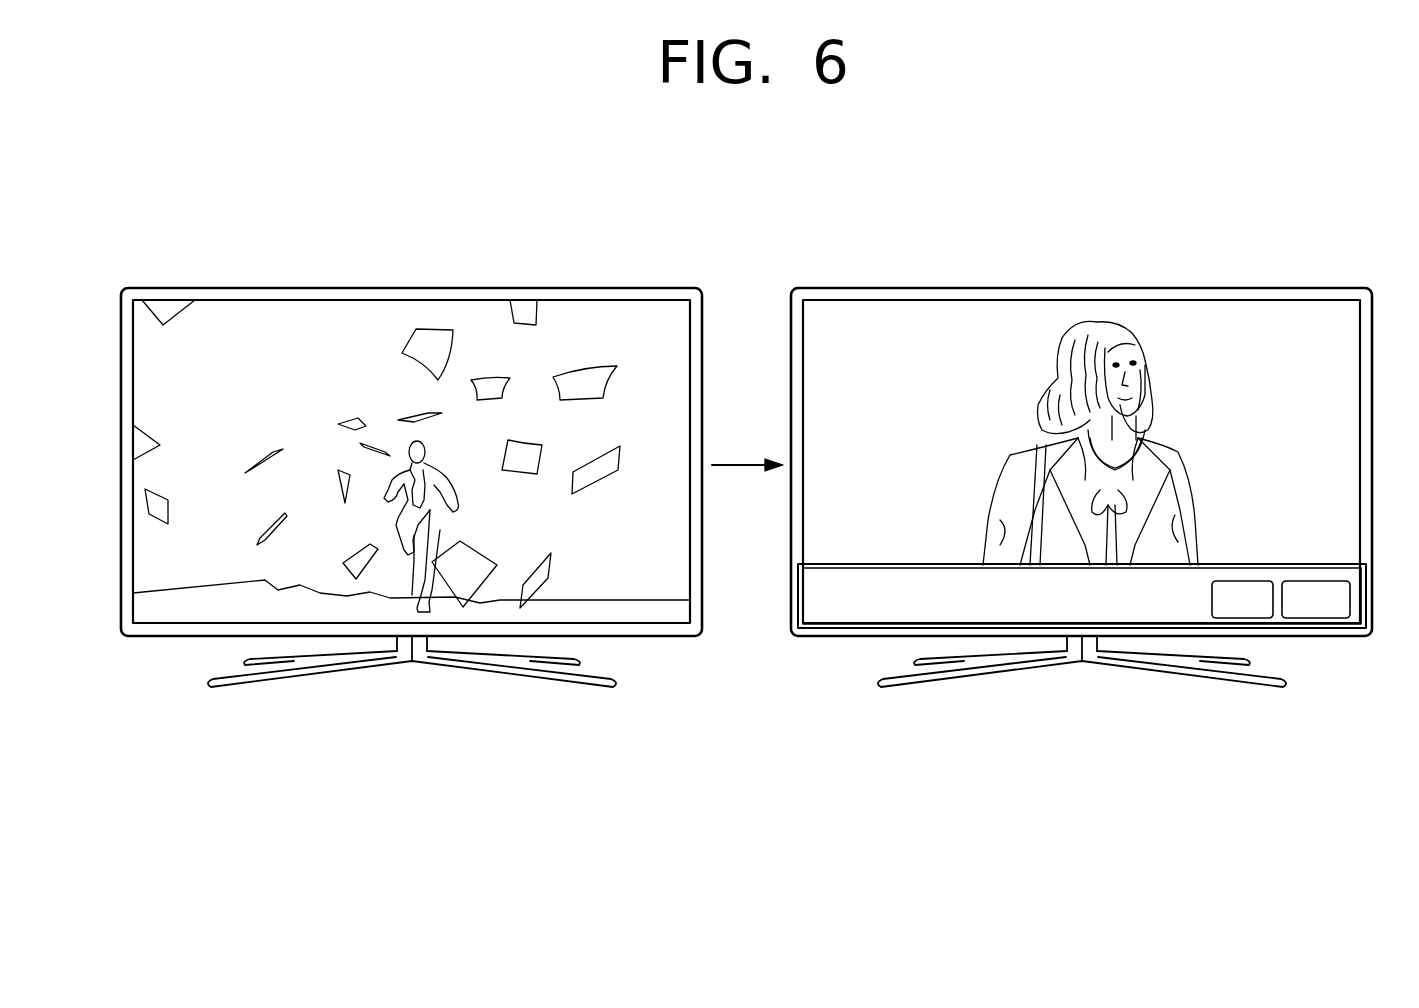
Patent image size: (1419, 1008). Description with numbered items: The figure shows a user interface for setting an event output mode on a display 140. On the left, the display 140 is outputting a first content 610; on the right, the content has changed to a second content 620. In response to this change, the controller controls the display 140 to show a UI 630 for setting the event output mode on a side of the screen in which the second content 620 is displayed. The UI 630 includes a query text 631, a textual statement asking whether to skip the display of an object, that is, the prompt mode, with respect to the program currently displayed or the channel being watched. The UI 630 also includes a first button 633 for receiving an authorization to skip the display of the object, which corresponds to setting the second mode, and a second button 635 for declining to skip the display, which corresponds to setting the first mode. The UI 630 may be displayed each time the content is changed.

The display 140 is at (678, 288).
The first content 610 is at (603, 300).
The second content 620 is at (1273, 300).
The UI for setting the event output mode 630 is at (798, 588).
The query text 631 is at (848, 612).
The first button 633 is at (1250, 606).
The second button 635 is at (1328, 606).